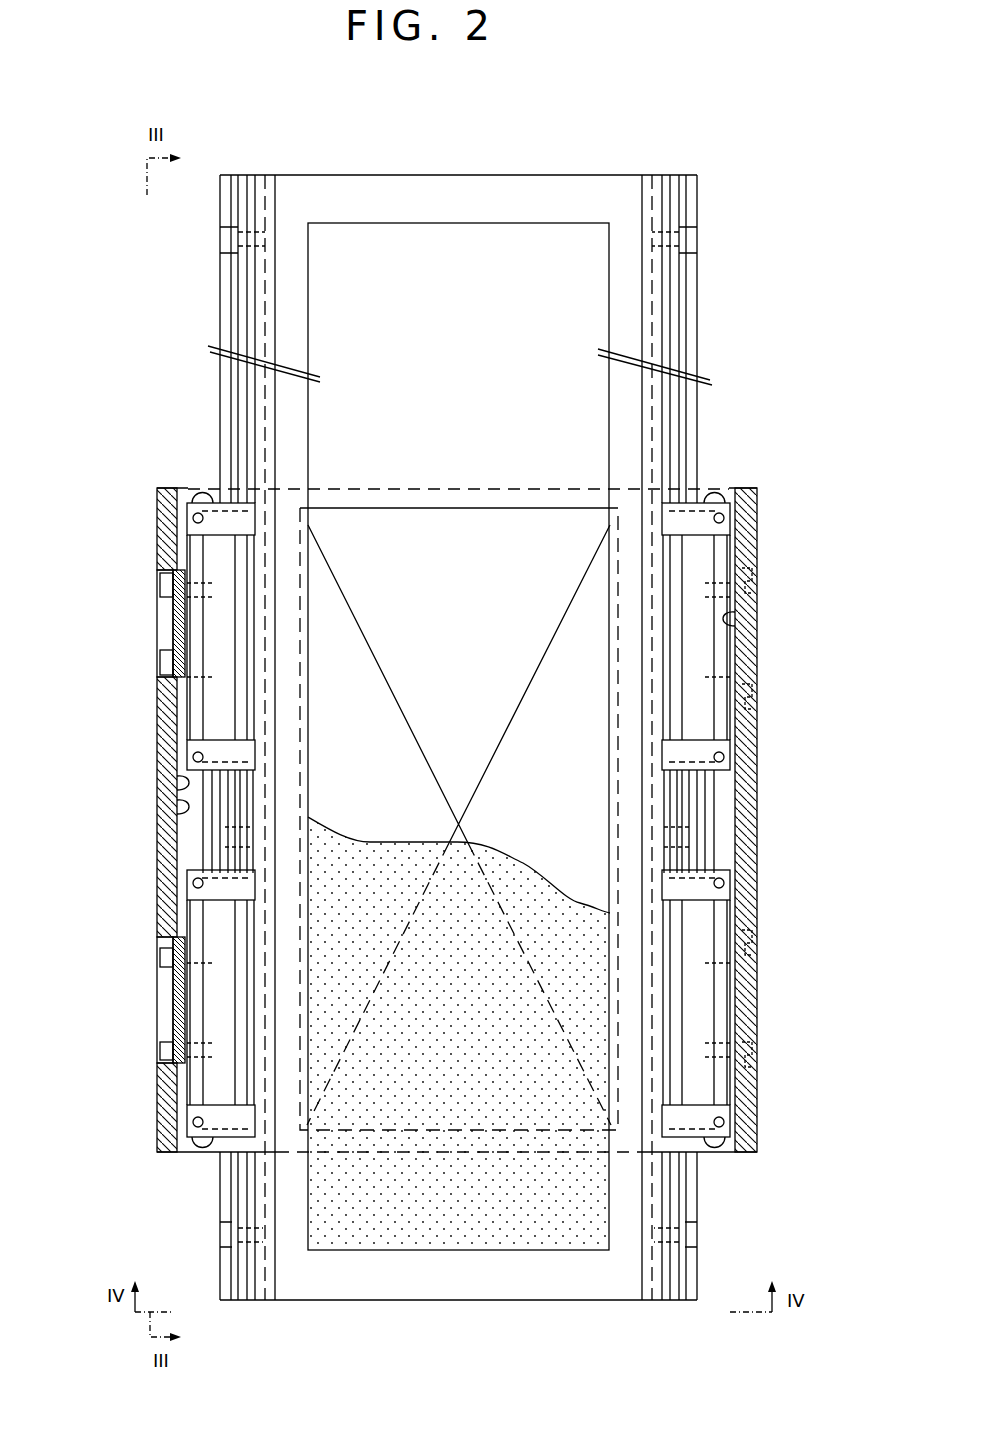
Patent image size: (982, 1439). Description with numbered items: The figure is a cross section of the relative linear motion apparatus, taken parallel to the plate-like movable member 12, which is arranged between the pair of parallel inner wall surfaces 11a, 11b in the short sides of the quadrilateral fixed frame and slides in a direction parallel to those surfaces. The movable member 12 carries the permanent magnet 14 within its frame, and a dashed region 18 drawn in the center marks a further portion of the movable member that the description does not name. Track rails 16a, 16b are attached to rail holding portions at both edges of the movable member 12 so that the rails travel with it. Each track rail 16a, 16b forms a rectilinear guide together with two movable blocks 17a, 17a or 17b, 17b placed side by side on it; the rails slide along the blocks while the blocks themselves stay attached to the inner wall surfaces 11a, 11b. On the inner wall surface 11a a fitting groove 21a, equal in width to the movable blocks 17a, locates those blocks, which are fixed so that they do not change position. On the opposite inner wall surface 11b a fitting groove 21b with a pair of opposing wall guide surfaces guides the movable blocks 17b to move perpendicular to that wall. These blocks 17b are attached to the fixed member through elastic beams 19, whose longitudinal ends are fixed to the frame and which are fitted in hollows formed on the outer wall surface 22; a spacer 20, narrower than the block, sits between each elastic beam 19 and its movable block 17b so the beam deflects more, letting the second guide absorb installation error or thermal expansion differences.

The inner wall surface 11a is at (735, 788).
The inner wall surface 11b is at (178, 813).
The movable member 12 is at (558, 197).
The permanent magnet 14 is at (475, 1237).
The track rail 16a is at (683, 1198).
The track rail 16b is at (233, 1202).
The movable block 17a is at (705, 677).
The movable block 17b is at (175, 553).
The hopper 18 is at (562, 522).
The elastic beam 19 is at (165, 660).
The spacer 20 is at (175, 620).
The fitting groove 21a is at (720, 620).
The fitting groove 21b is at (185, 783).
The outer wall surface 22 is at (160, 633).